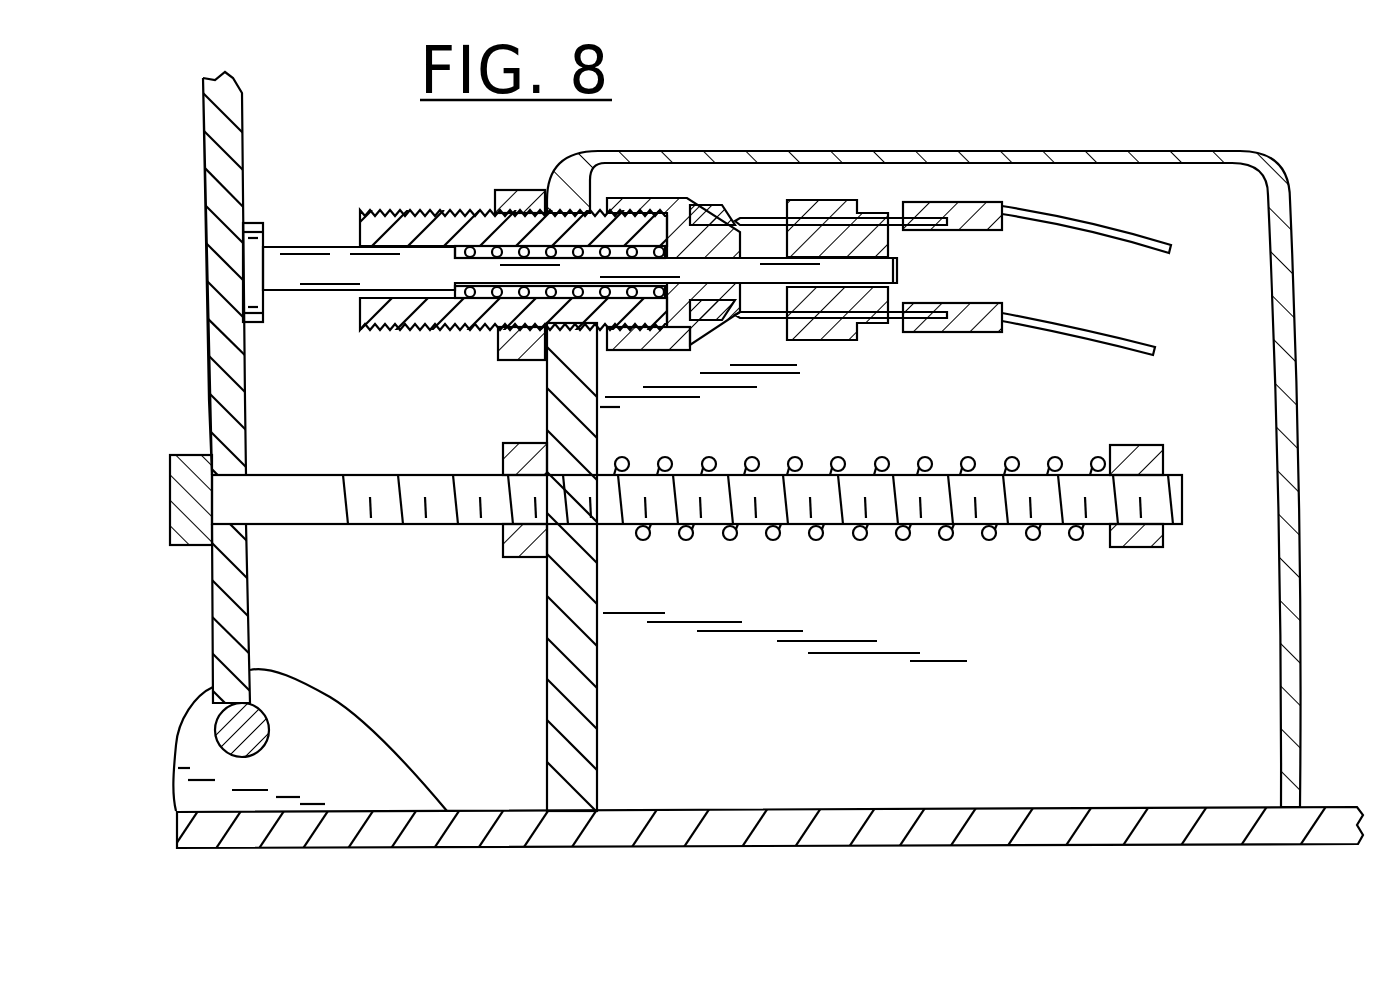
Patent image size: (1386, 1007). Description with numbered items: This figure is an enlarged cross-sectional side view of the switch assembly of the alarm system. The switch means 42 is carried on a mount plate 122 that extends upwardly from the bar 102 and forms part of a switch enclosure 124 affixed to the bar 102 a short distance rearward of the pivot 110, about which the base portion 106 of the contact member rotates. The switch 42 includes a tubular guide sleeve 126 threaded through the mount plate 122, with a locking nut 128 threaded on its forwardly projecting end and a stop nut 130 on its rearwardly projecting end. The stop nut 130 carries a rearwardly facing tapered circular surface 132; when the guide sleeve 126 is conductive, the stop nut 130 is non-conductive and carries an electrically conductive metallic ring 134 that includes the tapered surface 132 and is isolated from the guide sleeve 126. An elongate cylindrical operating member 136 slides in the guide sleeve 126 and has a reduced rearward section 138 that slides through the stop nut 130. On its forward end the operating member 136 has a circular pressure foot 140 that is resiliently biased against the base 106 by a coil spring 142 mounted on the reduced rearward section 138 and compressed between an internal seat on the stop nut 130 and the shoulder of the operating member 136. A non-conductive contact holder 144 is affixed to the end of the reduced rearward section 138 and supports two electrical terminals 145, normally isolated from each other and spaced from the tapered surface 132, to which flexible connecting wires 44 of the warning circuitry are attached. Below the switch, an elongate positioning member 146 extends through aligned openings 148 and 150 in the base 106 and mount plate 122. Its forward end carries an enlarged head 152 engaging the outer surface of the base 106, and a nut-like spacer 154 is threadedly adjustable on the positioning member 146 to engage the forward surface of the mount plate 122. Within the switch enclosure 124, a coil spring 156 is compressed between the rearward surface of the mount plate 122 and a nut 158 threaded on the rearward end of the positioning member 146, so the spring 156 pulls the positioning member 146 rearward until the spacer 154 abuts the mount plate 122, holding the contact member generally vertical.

The switch means 42 is at (478, 205).
The flexible connecting wires 44 is at (1135, 250).
The bar 102 is at (890, 808).
The base portion 106 is at (232, 163).
The pivot 110 is at (262, 720).
The mount plate 122 is at (597, 728).
The switch enclosure 124 is at (1000, 162).
The tubular guide sleeve 126 is at (365, 318).
The locking nut 128 is at (520, 195).
The stop nut 130 is at (690, 348).
The tapered circular surface 132 is at (723, 330).
The electrically conductive metallic ring 134 is at (715, 213).
The operating member 136 is at (297, 253).
The reduced rearward section 138 is at (510, 292).
The pressure foot 140 is at (245, 272).
The coil spring 142 is at (520, 352).
The contact holder 144 is at (835, 232).
The electrical terminals 145 is at (895, 250).
The positioning member 146 is at (375, 475).
The opening 148 is at (238, 527).
The opening 150 is at (603, 515).
The enlarged head 152 is at (180, 482).
The nut-like spacer 154 is at (520, 557).
The coil spring 156 is at (940, 540).
The nut 158 is at (1145, 548).